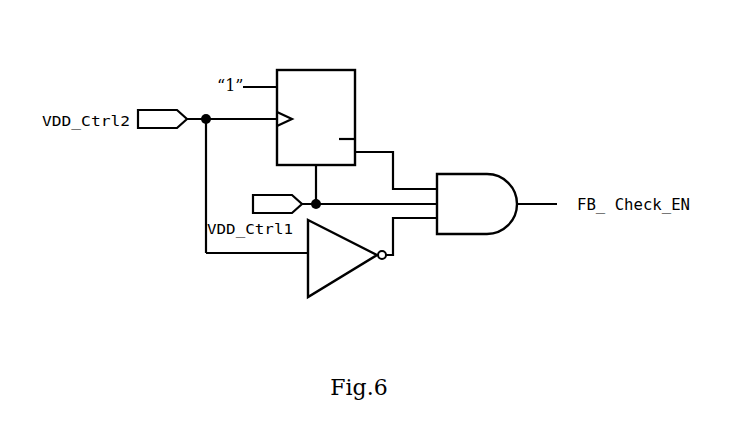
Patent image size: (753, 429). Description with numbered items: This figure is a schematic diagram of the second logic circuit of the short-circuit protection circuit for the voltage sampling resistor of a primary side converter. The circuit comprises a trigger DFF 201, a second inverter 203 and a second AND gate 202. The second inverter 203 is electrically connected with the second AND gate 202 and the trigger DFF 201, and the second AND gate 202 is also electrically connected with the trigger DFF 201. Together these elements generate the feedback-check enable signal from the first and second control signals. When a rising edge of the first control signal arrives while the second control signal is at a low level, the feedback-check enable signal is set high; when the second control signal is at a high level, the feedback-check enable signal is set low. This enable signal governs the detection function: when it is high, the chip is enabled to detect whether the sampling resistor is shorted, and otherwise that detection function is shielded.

The trigger DFF 201 is at (333, 70).
The second AND gate 202 is at (467, 174).
The second inverter 203 is at (332, 288).